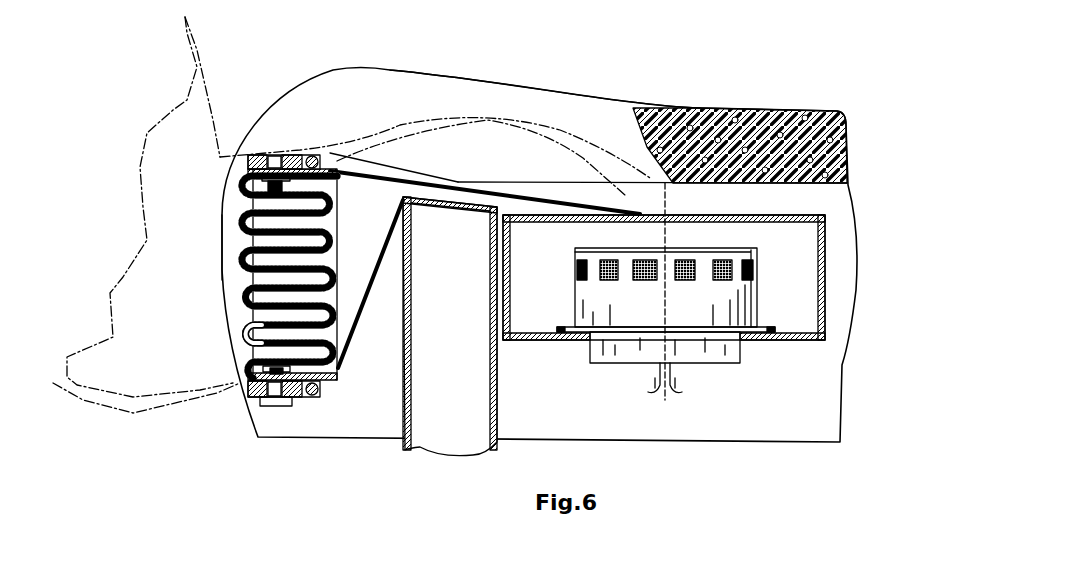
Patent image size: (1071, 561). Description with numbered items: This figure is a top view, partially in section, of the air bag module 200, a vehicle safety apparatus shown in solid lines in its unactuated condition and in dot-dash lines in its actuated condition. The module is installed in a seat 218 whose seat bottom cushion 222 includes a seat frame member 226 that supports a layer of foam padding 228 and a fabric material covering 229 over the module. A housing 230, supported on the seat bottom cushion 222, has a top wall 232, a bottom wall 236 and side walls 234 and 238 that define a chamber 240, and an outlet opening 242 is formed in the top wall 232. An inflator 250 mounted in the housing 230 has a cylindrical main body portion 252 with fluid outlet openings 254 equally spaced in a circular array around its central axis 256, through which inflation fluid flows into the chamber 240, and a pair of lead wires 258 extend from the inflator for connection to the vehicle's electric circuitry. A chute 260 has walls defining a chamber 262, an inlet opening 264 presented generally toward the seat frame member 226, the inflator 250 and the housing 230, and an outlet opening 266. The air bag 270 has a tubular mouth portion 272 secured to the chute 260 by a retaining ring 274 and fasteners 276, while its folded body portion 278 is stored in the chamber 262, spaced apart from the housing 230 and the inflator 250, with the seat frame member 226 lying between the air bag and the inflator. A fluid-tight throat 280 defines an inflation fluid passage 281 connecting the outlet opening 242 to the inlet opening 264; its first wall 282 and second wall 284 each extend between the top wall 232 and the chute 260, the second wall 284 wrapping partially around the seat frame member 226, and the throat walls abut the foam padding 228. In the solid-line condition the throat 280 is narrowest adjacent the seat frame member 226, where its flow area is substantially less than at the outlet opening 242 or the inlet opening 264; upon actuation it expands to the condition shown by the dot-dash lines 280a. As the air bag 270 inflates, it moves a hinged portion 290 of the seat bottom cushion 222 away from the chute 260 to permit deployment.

The air bag module 200 is at (178, 151).
The seat 218 is at (357, 60).
The seat bottom cushion 222 is at (428, 77).
The seat frame member 226 is at (396, 366).
The foam padding 228 is at (647, 133).
The fabric material covering 229 is at (693, 110).
The housing 230 is at (733, 203).
The top wall 232 is at (797, 213).
The side wall 234 is at (827, 233).
The bottom wall 236 is at (797, 341).
The side wall 238 is at (705, 239).
The chamber 240 is at (560, 291).
The outlet opening 242 is at (560, 224).
The inflator 250 is at (733, 306).
The cylindrical main body portion 252 is at (755, 270).
The fluid outlet openings 254 is at (640, 281).
The central axis 256 is at (707, 316).
The lead wires 258 is at (673, 372).
The chute 260 is at (203, 266).
The chamber 262 is at (280, 331).
The inlet opening 264 is at (340, 213).
The outlet opening 266 is at (253, 240).
The air bag 270 is at (226, 207).
The mouth portion 272 is at (312, 155).
The retaining ring 274 is at (250, 156).
The fasteners 276 is at (280, 400).
The body portion 278 is at (243, 343).
The throat 280 is at (541, 183).
The dot-dash lines 280a is at (497, 106).
The inflation fluid passage 281 is at (458, 192).
The first wall 282 is at (510, 190).
The second wall 284 is at (442, 200).
The hinged portion 290 is at (83, 403).